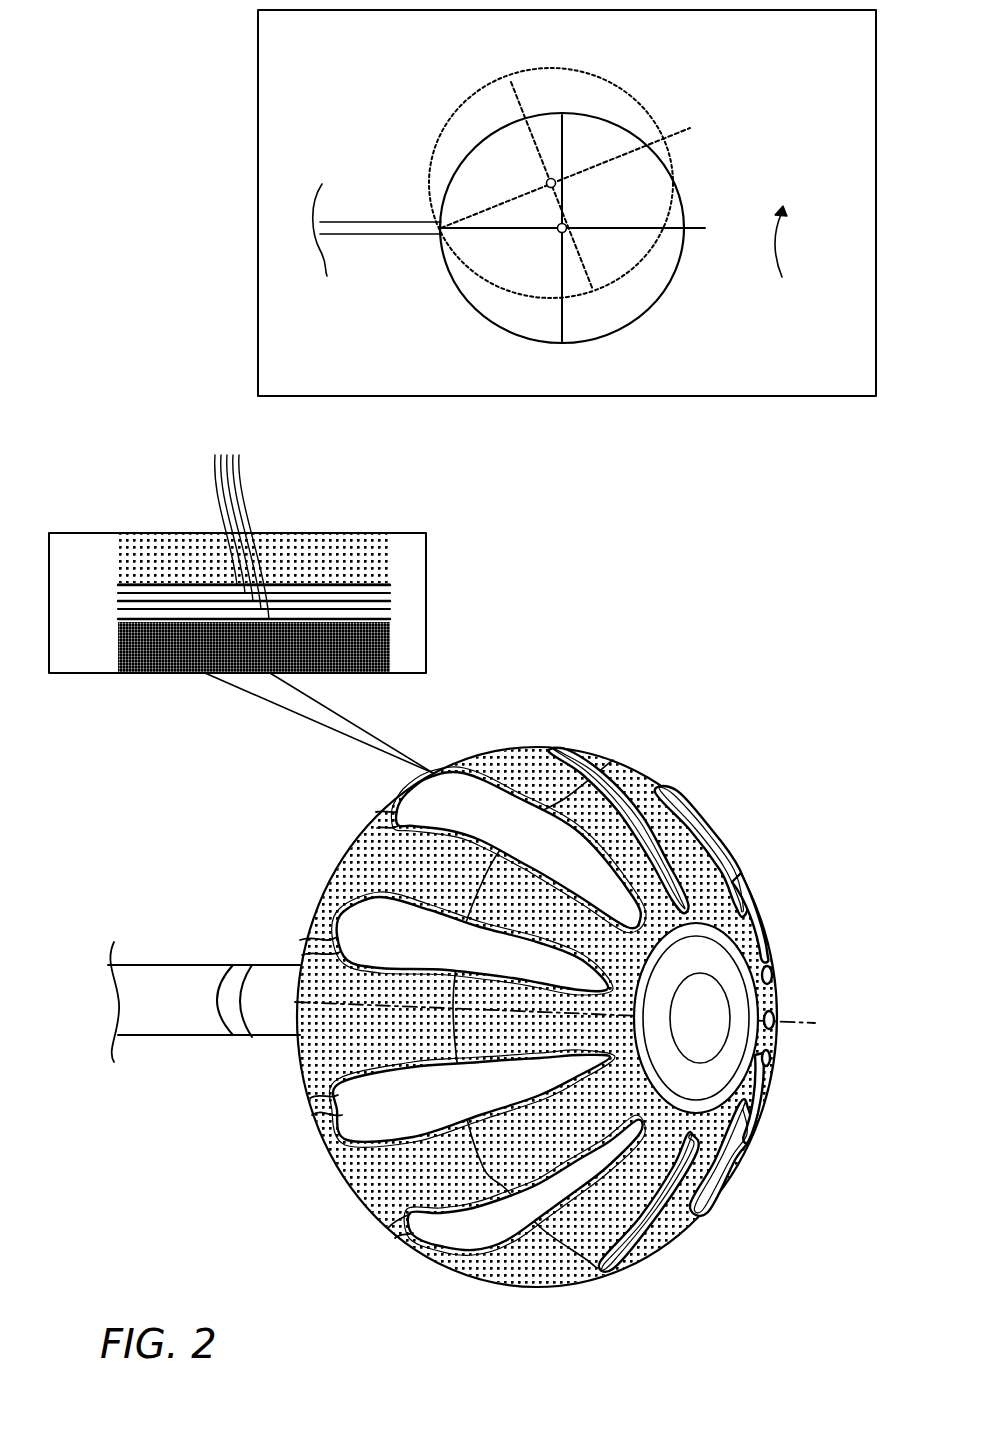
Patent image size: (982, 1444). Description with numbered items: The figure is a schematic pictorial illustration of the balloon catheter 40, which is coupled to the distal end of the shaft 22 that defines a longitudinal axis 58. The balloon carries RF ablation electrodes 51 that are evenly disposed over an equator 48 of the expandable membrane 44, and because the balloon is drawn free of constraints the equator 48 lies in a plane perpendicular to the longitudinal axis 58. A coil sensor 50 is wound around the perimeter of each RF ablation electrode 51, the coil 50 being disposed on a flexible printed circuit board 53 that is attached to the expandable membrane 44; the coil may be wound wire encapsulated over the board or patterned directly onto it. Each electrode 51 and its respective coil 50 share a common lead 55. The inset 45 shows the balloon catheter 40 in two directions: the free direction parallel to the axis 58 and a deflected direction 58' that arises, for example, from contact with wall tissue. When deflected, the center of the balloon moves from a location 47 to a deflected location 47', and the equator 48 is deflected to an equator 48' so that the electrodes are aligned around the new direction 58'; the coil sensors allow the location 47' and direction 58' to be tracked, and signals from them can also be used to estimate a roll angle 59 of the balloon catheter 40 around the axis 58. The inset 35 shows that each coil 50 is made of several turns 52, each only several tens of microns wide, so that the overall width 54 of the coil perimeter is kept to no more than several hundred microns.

The shaft 22 is at (381, 240).
The inset 35 is at (93, 572).
The balloon catheter 40 is at (719, 313).
The expandable membrane 44 is at (288, 547).
The inset 45 is at (323, 60).
The location 47 is at (490, 287).
The deflected location 47' is at (464, 169).
The equator 48 is at (560, 691).
The deflected equator 48' is at (521, 183).
The coil sensor 50 is at (390, 602).
The RF ablation electrode 51 is at (163, 668).
The turns 52 is at (240, 522).
The flexible printed circuit board 53 is at (164, 574).
The overall width 54 is at (112, 580).
The lead 55 is at (312, 947).
The longitudinal axis 58 is at (569, 662).
The deflected direction 58' is at (590, 170).
The roll angle 59 is at (789, 240).